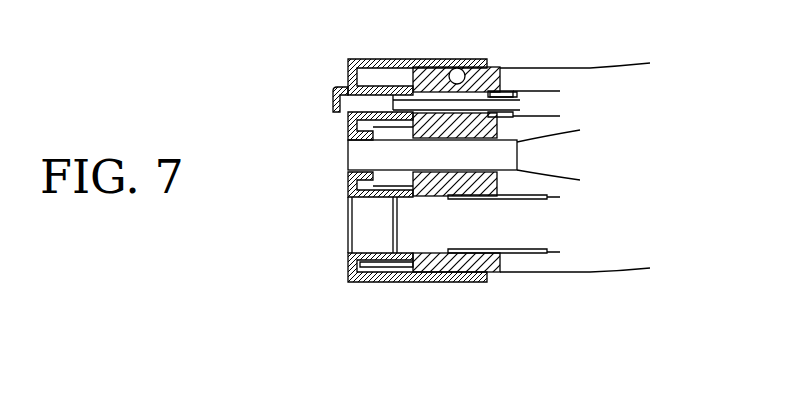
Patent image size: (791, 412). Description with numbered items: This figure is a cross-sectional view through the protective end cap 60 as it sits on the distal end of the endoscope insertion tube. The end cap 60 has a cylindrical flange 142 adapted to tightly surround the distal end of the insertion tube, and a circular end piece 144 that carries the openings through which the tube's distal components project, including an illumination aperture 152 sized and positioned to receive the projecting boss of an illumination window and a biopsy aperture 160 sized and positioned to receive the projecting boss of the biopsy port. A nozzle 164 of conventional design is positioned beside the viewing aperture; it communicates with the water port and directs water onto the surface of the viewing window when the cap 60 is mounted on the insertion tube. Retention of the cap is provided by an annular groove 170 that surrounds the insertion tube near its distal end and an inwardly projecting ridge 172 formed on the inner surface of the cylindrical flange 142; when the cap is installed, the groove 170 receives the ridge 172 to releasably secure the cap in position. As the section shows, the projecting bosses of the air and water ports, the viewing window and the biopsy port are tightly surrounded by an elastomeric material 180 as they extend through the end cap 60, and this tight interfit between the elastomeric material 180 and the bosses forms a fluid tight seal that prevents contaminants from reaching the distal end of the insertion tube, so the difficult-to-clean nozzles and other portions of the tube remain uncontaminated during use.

The end cap 60 is at (383, 287).
The cylindrical flange 142 is at (432, 80).
The circular end piece 144 is at (352, 178).
The illumination aperture 152 is at (357, 152).
The biopsy aperture 160 is at (363, 225).
The nozzle 164 is at (332, 107).
The annular groove 170 is at (500, 77).
The inwardly projecting ridge 172 is at (460, 73).
The elastomeric material 180 is at (375, 59).